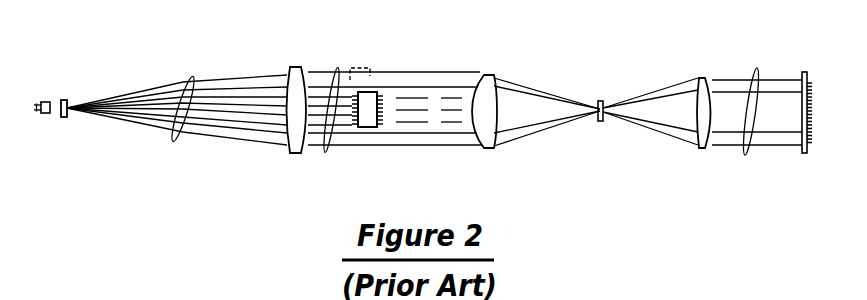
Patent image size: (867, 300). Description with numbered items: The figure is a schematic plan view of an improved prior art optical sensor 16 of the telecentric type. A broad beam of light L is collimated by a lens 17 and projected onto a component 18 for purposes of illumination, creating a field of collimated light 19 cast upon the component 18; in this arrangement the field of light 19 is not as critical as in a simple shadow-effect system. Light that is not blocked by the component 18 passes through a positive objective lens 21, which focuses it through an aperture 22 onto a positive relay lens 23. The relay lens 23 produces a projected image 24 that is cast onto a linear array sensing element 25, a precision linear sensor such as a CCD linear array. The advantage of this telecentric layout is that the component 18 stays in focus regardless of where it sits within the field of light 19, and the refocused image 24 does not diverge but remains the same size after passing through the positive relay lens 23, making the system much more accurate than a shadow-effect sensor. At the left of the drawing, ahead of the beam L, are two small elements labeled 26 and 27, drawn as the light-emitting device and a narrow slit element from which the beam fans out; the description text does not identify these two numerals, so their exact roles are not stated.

The improved prior art optical sensor 16 is at (148, 34).
The broad beam of light L is at (193, 76).
The lens 17 is at (297, 67).
The component 18 is at (371, 88).
The field of collimated light 19 is at (337, 67).
The positive objective lens 21 is at (485, 75).
The aperture 22 is at (602, 100).
The positive relay lens 23 is at (702, 78).
The projected image 24 is at (757, 68).
The linear array sensing element 25 is at (807, 72).
The light source 26 is at (43, 100).
The pinhole aperture 27 is at (65, 98).